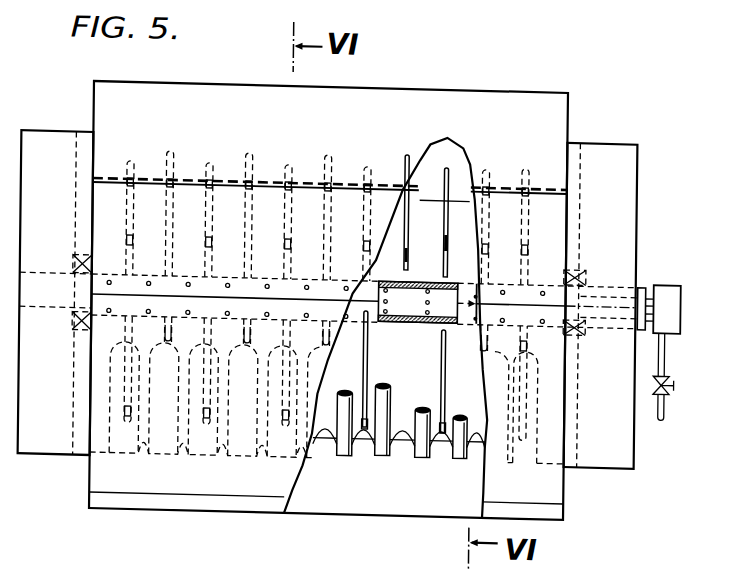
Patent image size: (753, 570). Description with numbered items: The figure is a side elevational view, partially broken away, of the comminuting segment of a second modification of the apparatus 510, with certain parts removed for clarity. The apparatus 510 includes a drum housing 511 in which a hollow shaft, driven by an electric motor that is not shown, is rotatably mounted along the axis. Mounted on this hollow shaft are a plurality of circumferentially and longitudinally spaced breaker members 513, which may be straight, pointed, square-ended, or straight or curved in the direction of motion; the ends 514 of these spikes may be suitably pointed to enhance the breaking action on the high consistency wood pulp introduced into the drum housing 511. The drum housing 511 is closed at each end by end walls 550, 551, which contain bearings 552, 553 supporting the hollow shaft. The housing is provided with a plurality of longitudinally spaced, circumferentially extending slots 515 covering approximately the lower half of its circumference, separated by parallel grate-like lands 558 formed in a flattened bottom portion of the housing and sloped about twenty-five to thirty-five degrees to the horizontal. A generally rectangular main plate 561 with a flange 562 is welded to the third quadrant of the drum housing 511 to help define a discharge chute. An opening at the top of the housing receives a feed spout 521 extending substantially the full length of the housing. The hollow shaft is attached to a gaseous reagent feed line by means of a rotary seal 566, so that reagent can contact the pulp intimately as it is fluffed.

The apparatus 510 is at (659, 229).
The drum housing 511 is at (574, 236).
The breaker members 513 is at (449, 193).
The ends of the spikes 514 is at (331, 152).
The slots 515 is at (169, 426).
The feed spout 521 is at (428, 90).
The end wall 550 is at (601, 142).
The end wall 551 is at (54, 141).
The bearing 552 is at (615, 270).
The bearing 553 is at (78, 302).
The grate-like lands 558 is at (151, 448).
The main plate 561 is at (107, 466).
The flange 562 is at (105, 505).
The rotary seal 566 is at (658, 316).